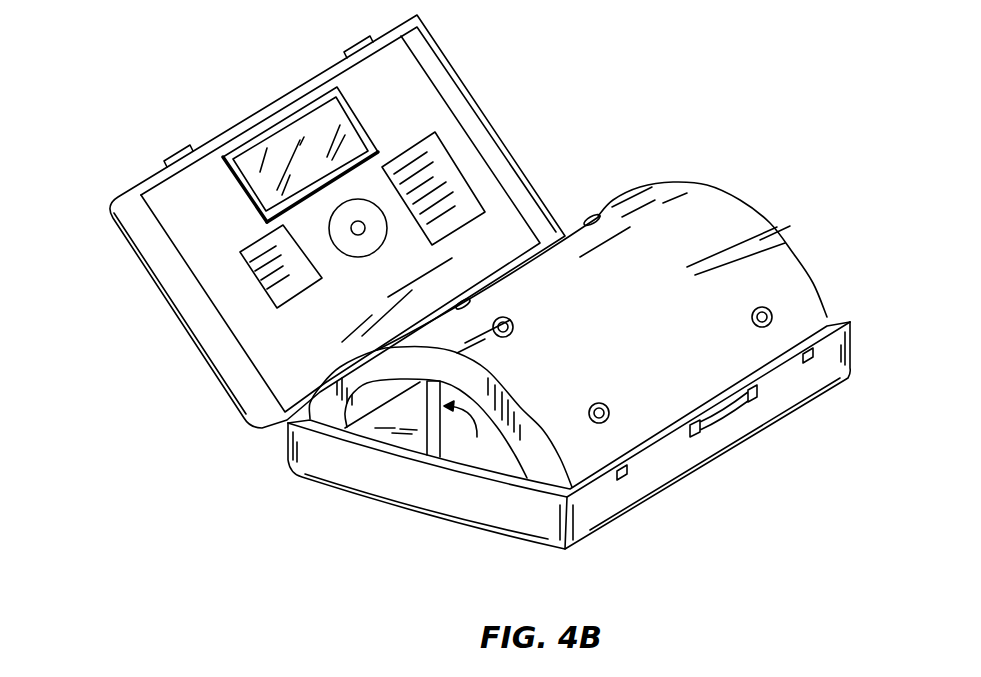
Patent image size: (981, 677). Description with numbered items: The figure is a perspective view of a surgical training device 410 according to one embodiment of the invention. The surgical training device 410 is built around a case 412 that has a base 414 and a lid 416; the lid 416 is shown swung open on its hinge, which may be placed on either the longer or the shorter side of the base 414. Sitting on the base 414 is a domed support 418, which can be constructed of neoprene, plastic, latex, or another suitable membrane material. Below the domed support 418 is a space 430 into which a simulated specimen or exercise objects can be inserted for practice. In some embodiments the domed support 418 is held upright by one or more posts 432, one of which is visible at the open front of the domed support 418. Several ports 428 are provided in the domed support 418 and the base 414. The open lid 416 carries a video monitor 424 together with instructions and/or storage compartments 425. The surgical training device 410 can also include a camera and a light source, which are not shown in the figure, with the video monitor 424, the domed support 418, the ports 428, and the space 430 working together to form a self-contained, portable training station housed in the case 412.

The surgical training device 410 is at (582, 127).
The case 412 is at (240, 453).
The base 414 is at (395, 495).
The lid 416 is at (203, 324).
The domed support 418 is at (787, 270).
The video monitor 424 is at (267, 133).
The instructions and/or storage compartments 425 is at (442, 157).
The ports 428 is at (590, 216).
The space 430 is at (390, 428).
The posts 432 is at (433, 445).